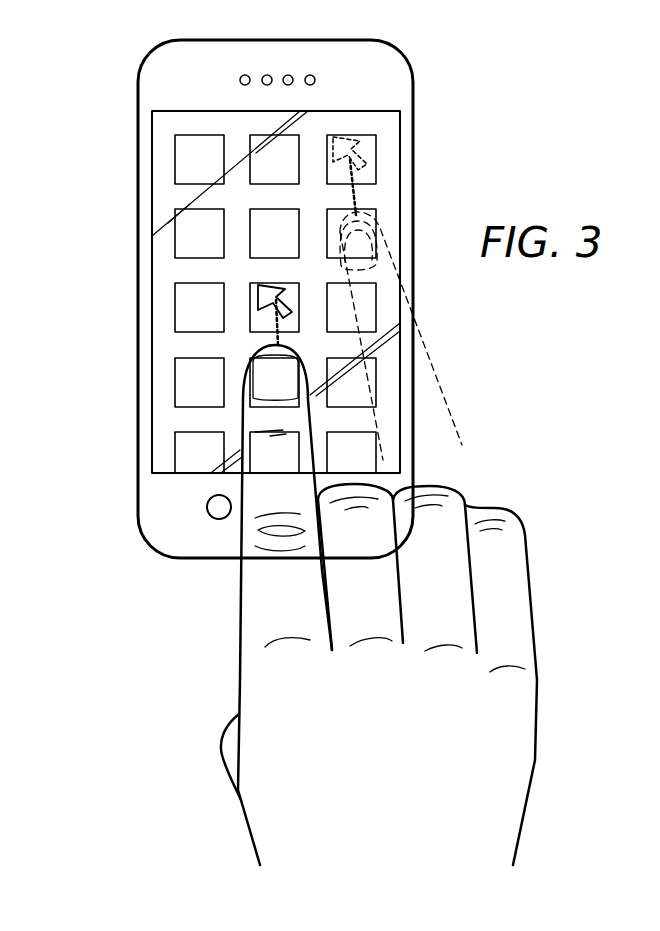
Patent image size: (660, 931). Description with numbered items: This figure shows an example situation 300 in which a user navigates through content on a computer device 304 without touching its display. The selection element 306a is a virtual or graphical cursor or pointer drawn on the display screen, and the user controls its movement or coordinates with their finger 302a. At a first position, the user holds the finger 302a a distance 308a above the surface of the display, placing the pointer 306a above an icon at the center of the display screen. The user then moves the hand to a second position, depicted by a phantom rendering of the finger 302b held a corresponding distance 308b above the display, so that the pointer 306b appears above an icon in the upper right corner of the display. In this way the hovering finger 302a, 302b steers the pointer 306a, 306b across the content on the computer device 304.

The example situation 300 is at (127, 184).
The finger 302a is at (242, 588).
The phantom rendering of the finger 302b is at (433, 372).
The computer device 304 is at (138, 443).
The selection element 306a is at (257, 298).
The pointer 306b is at (345, 136).
The distance 308a is at (278, 328).
The distance 308b is at (356, 178).